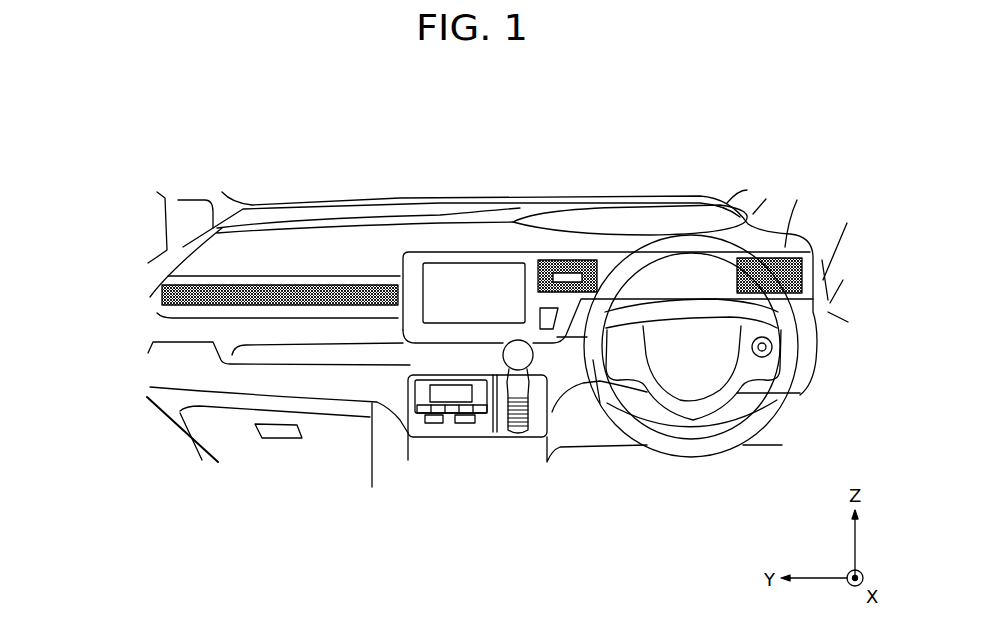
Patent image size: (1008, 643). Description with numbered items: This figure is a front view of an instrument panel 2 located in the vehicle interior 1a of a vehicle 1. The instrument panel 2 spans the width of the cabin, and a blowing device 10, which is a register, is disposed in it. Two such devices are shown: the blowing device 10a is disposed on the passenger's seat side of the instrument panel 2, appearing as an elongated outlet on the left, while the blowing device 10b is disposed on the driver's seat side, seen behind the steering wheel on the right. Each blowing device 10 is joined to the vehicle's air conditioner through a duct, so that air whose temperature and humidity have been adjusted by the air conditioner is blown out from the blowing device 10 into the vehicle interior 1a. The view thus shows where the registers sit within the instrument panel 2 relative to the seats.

The vehicle 1 is at (446, 313).
The vehicle interior 1a is at (446, 313).
The instrument panel 2 is at (405, 360).
The blowing device 10 is at (440, 203).
The blowing device 10a is at (203, 265).
The blowing device 10b is at (779, 242).